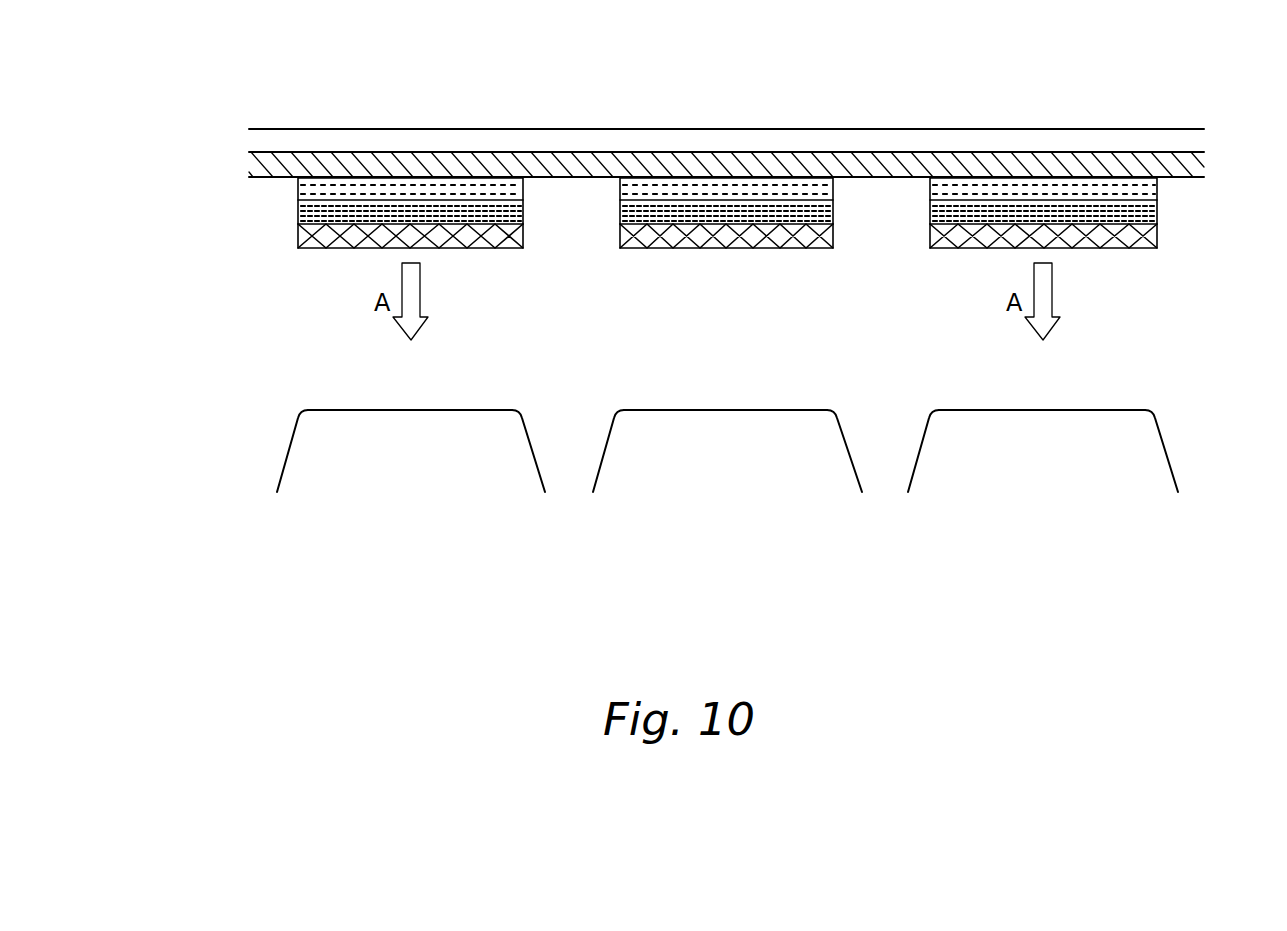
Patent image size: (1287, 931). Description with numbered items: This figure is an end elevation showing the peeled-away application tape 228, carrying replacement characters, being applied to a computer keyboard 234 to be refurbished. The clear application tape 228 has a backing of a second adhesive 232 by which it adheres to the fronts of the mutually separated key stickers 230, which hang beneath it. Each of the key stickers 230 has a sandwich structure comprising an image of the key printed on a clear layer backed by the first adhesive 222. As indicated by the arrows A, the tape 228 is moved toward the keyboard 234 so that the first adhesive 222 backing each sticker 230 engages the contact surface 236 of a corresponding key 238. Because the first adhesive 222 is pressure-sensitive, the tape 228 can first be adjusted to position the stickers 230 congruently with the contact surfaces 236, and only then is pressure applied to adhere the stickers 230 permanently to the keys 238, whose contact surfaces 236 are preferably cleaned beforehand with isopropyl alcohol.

The first adhesive 222 is at (298, 237).
The application tape 228 is at (725, 128).
The key stickers 230 is at (340, 268).
The second adhesive 232 is at (1187, 168).
The keyboard 234 is at (686, 433).
The contact surface 236 is at (408, 409).
The key 238 is at (433, 467).